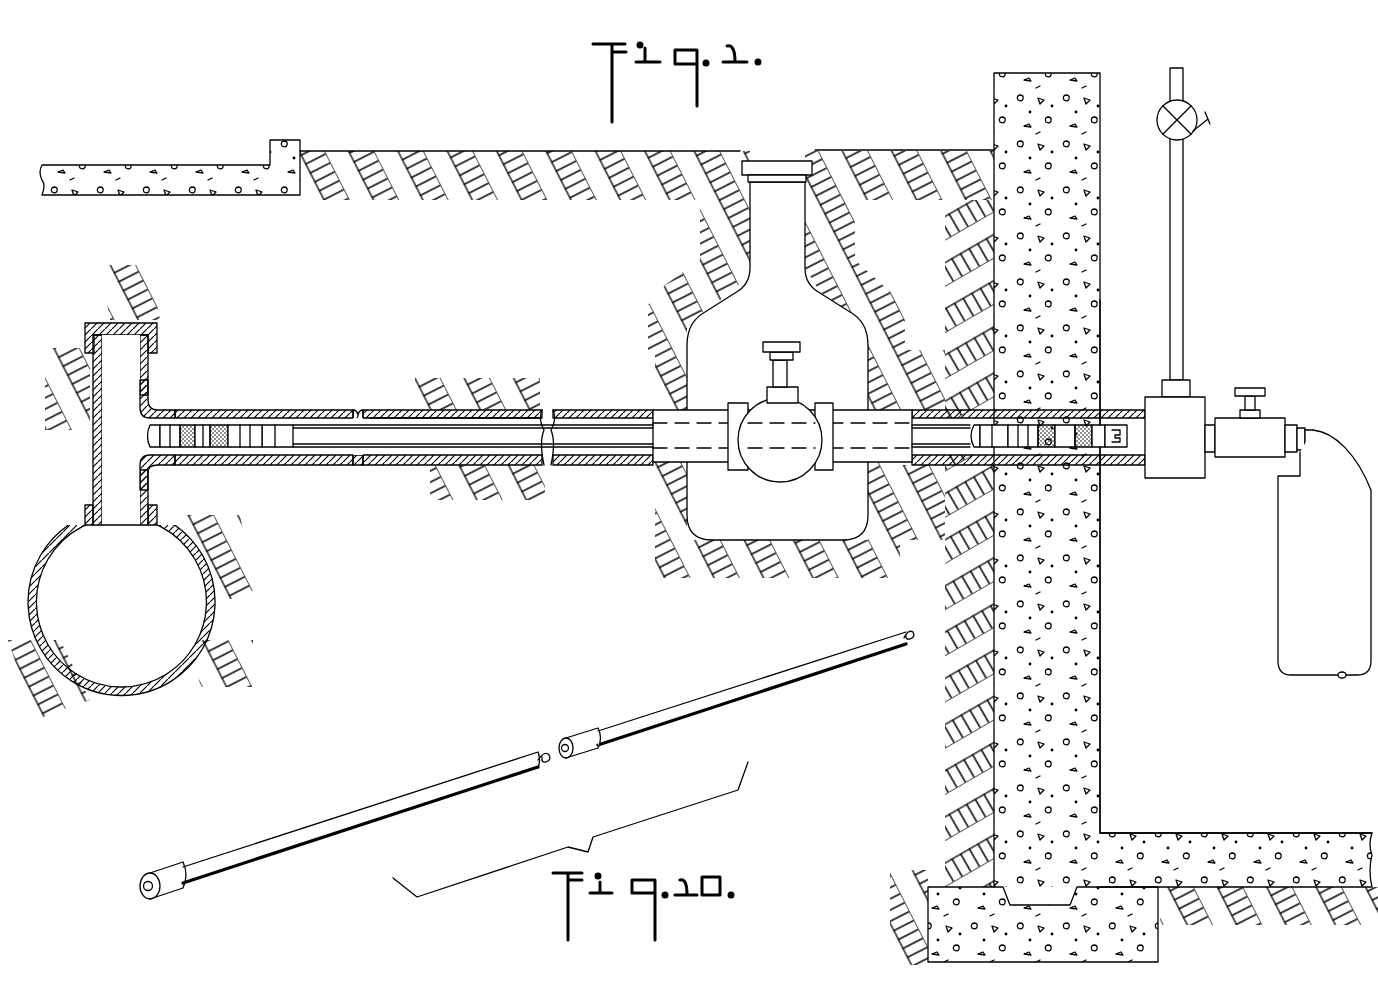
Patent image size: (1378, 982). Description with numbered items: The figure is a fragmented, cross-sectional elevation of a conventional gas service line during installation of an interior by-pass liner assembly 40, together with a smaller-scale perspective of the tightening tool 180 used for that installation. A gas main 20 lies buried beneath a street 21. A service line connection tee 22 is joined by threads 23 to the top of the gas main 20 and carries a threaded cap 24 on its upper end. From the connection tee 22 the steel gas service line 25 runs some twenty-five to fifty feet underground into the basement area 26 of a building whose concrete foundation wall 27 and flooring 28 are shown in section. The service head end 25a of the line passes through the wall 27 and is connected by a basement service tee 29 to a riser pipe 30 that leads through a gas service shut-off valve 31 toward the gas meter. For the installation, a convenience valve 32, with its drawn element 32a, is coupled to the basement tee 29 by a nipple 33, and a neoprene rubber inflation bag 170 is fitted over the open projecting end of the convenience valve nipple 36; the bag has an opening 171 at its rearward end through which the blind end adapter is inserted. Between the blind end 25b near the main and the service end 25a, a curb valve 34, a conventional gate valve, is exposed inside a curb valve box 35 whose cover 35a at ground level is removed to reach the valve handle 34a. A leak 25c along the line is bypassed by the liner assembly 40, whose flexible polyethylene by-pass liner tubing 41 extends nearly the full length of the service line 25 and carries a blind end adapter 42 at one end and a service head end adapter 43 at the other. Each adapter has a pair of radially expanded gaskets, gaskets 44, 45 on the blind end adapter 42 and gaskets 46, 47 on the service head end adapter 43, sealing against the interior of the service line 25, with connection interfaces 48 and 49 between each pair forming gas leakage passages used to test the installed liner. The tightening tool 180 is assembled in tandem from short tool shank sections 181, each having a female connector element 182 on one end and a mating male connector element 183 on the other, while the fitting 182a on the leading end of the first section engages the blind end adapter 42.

In FIG. 1, the gas main 20 is at (214, 600).
In FIG. 1, the street 21 is at (208, 198).
In FIG. 1, the service line connection tee 22 is at (150, 374).
In FIG. 1, the threads 23 is at (88, 505).
In FIG. 1, the threaded cap 24 is at (162, 326).
In FIG. 1, the gas service line 25 is at (246, 407).
In FIG. 1, the service head end 25a is at (1118, 468).
In FIG. 1, the blind end 25b is at (178, 408).
In FIG. 1, the leak 25c is at (370, 403).
In FIG. 1, the basement area 26 is at (1163, 637).
In FIG. 1, the concrete foundation wall 27 is at (1082, 722).
In FIG. 1, the flooring 28 is at (1202, 833).
In FIG. 1, the basement service tee 29 is at (1172, 478).
In FIG. 1, the riser pipe 30 is at (1185, 250).
In FIG. 1, the gas service shut-off valve 31 is at (1196, 132).
In FIG. 1, the convenience valve 32 is at (1277, 418).
In FIG. 1, the valve handle 32a is at (1262, 388).
In FIG. 1, the nipple 33 is at (1212, 422).
In FIG. 1, the curb valve 34 is at (779, 472).
In FIG. 1, the handle 34a is at (781, 340).
In FIG. 1, the curb valve box 35 is at (766, 267).
In FIG. 1, the valve box cover 35a is at (782, 160).
In FIG. 1, the convenience valve nipple 36 is at (1302, 425).
In FIG. 1, the interior by-pass liner assembly 40 is at (400, 450).
In FIG. 1, the by-pass liner tubing 41 is at (478, 428).
In FIG. 1, the blind end adapter 42 is at (255, 445).
In FIG. 1, the service head end adapter 43 is at (983, 470).
In FIG. 1, the gasket 44 is at (184, 450).
In FIG. 1, the gasket 45 is at (243, 450).
In FIG. 1, the gasket 46 is at (1096, 410).
In FIG. 1, the gasket 47 is at (1044, 424).
In FIG. 1, the connection interface 48 is at (214, 449).
In FIG. 1, the connection interface 49 is at (1070, 418).
In FIG. 1, the inflation bag 170 is at (1315, 432).
In FIG. 1, the opening 171 is at (1341, 678).
In FIG. 10, the blind end adapter tightening tool 180 is at (532, 765).
In FIG. 10, the tool shank sections 181 is at (387, 801).
In FIG. 10, the female connector elements 182 is at (592, 750).
In FIG. 10, the fitting 182a is at (172, 860).
In FIG. 10, the male connector elements 183 is at (544, 766).